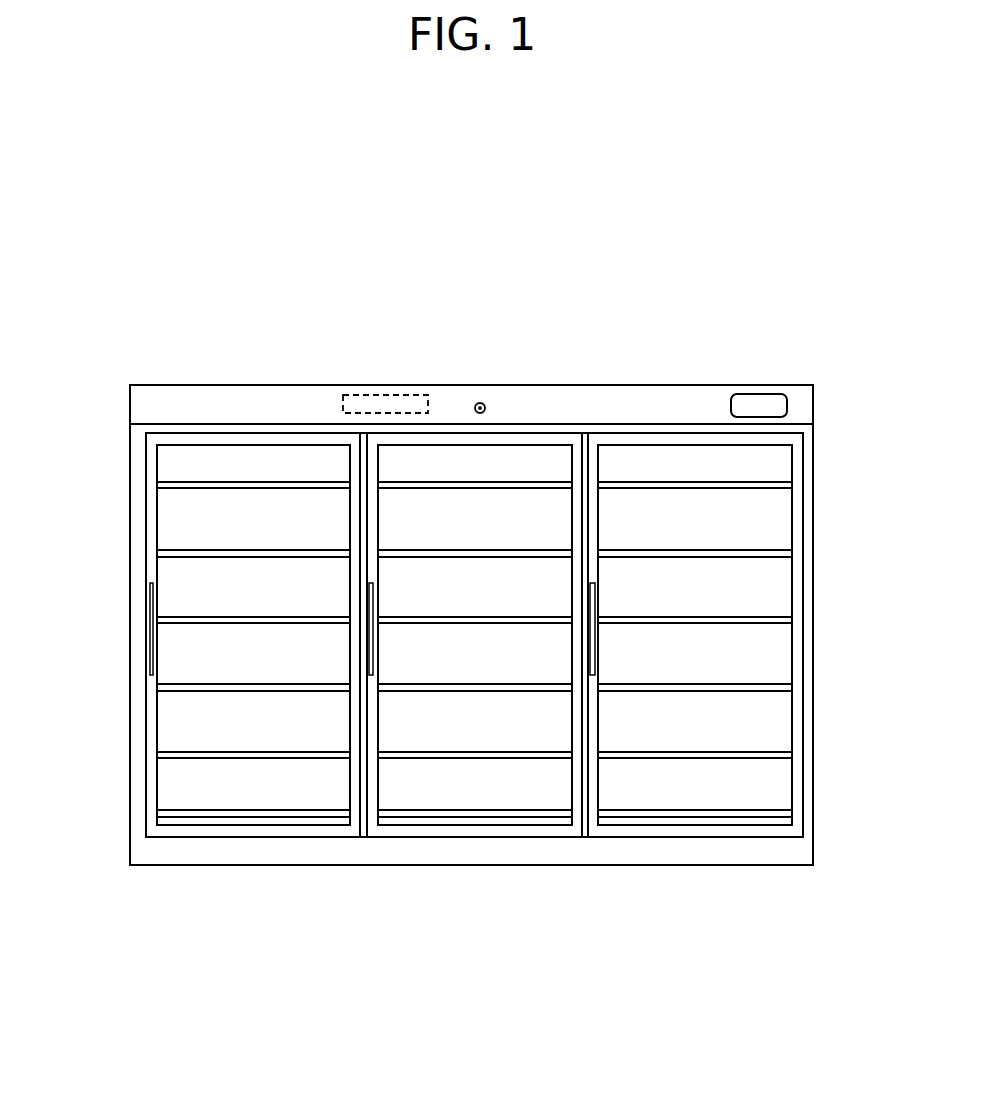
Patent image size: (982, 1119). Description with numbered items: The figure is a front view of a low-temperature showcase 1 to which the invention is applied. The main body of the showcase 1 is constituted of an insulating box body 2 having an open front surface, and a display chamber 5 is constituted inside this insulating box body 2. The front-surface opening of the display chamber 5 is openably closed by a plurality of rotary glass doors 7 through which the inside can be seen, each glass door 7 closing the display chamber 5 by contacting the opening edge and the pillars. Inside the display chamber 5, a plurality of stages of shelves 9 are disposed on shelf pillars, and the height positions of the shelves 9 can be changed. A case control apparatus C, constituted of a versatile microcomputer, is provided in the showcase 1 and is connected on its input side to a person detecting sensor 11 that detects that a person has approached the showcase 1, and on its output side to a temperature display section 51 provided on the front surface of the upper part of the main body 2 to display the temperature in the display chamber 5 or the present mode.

The showcase 1 is at (718, 345).
The insulating box body 2 is at (206, 392).
The case control apparatus C is at (395, 392).
The person detecting sensor 11 is at (480, 402).
The temperature display section 51 is at (775, 392).
The rotary glass door 7 is at (150, 738).
The shelf 9 is at (555, 485).
The display chamber 5 is at (480, 602).